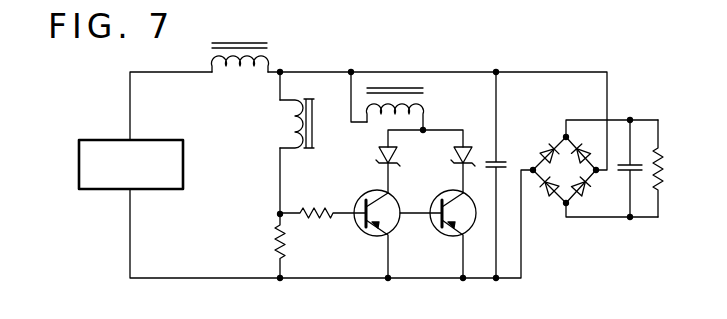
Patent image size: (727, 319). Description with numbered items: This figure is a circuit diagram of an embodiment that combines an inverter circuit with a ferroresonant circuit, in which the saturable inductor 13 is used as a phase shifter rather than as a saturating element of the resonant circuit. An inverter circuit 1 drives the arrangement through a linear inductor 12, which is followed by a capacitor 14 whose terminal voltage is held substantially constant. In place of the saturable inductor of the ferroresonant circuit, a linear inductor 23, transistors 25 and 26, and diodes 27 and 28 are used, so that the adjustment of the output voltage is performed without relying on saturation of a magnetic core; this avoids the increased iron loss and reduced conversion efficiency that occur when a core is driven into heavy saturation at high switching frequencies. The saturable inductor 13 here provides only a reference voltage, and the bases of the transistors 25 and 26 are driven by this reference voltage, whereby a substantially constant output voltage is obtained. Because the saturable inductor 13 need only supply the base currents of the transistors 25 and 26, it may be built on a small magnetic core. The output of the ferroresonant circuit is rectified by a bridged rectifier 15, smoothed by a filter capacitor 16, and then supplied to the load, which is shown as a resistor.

The AC power source 1 is at (90, 194).
The linear inductor 12 is at (276, 52).
The saturable inductor 13 is at (280, 127).
The linear inductor 23 is at (432, 90).
The diode 27 is at (378, 160).
The diode 28 is at (476, 142).
The capacitor 14 is at (510, 160).
The transistor 25 is at (358, 234).
The transistor 26 is at (438, 234).
The bridged rectifier 15 is at (552, 208).
The filter capacitor 16 is at (624, 178).